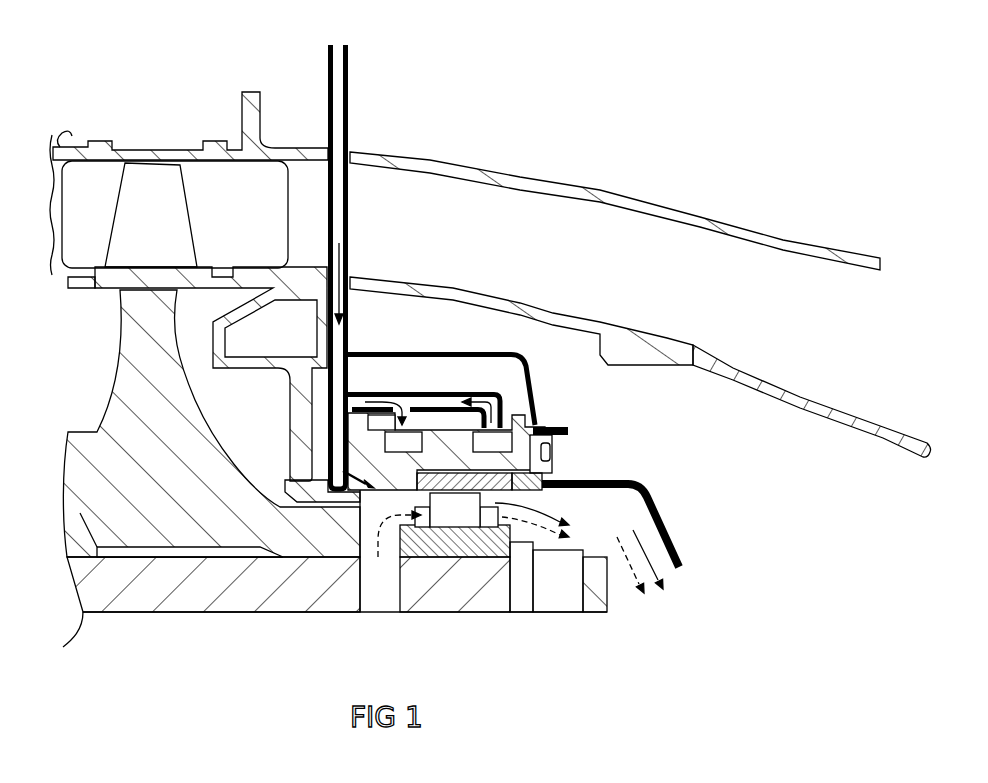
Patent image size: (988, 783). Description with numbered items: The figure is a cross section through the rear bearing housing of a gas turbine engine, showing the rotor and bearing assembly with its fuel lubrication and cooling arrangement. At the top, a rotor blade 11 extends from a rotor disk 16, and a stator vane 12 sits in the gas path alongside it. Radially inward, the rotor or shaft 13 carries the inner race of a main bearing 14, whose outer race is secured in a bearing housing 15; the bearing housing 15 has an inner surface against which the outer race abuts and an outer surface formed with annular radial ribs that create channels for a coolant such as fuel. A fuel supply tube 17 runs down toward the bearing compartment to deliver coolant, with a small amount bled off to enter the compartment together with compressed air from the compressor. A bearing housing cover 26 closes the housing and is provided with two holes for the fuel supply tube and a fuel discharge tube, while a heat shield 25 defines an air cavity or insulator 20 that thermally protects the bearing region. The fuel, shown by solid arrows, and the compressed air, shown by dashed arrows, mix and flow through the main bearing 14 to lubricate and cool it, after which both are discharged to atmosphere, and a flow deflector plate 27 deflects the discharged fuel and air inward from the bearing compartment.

The rotor blade 11 is at (150, 207).
The stator vane 12 is at (423, 212).
The rotor or shaft 13 is at (193, 587).
The main bearing 14 is at (457, 515).
The bearing housing 15 is at (493, 462).
The rotor disk 16 is at (147, 450).
The fuel supply tube 17 is at (338, 83).
The air cavity or insulator 20 is at (430, 370).
The heat shield 25 is at (493, 350).
The bearing housing cover 26 is at (440, 423).
The flow deflector plate 27 is at (658, 512).